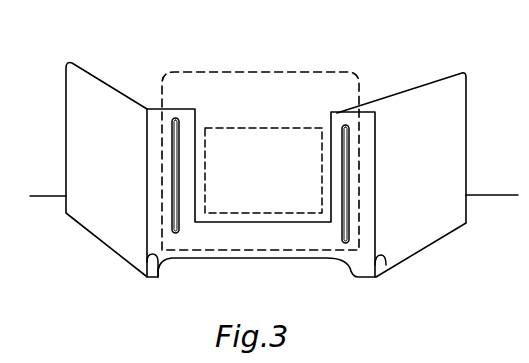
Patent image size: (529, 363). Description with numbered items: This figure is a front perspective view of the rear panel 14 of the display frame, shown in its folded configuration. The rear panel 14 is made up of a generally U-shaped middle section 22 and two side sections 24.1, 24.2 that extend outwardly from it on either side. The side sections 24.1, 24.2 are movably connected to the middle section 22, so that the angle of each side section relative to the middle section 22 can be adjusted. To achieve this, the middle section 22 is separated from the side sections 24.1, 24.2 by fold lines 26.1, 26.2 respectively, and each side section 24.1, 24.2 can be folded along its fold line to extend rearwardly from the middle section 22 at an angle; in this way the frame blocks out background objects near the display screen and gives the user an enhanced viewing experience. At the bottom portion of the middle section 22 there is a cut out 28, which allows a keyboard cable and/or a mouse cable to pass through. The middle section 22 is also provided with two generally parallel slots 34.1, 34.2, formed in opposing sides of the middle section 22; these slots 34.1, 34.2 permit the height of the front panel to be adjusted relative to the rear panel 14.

The rear panel 14 is at (388, 87).
The middle section 22 is at (352, 268).
The side section 24.1 is at (128, 237).
The side section 24.2 is at (397, 235).
The fold line 26.1 is at (157, 275).
The fold line 26.2 is at (386, 265).
The cut out 28 is at (207, 265).
The slot 34.1 is at (181, 133).
The slot 34.2 is at (339, 135).